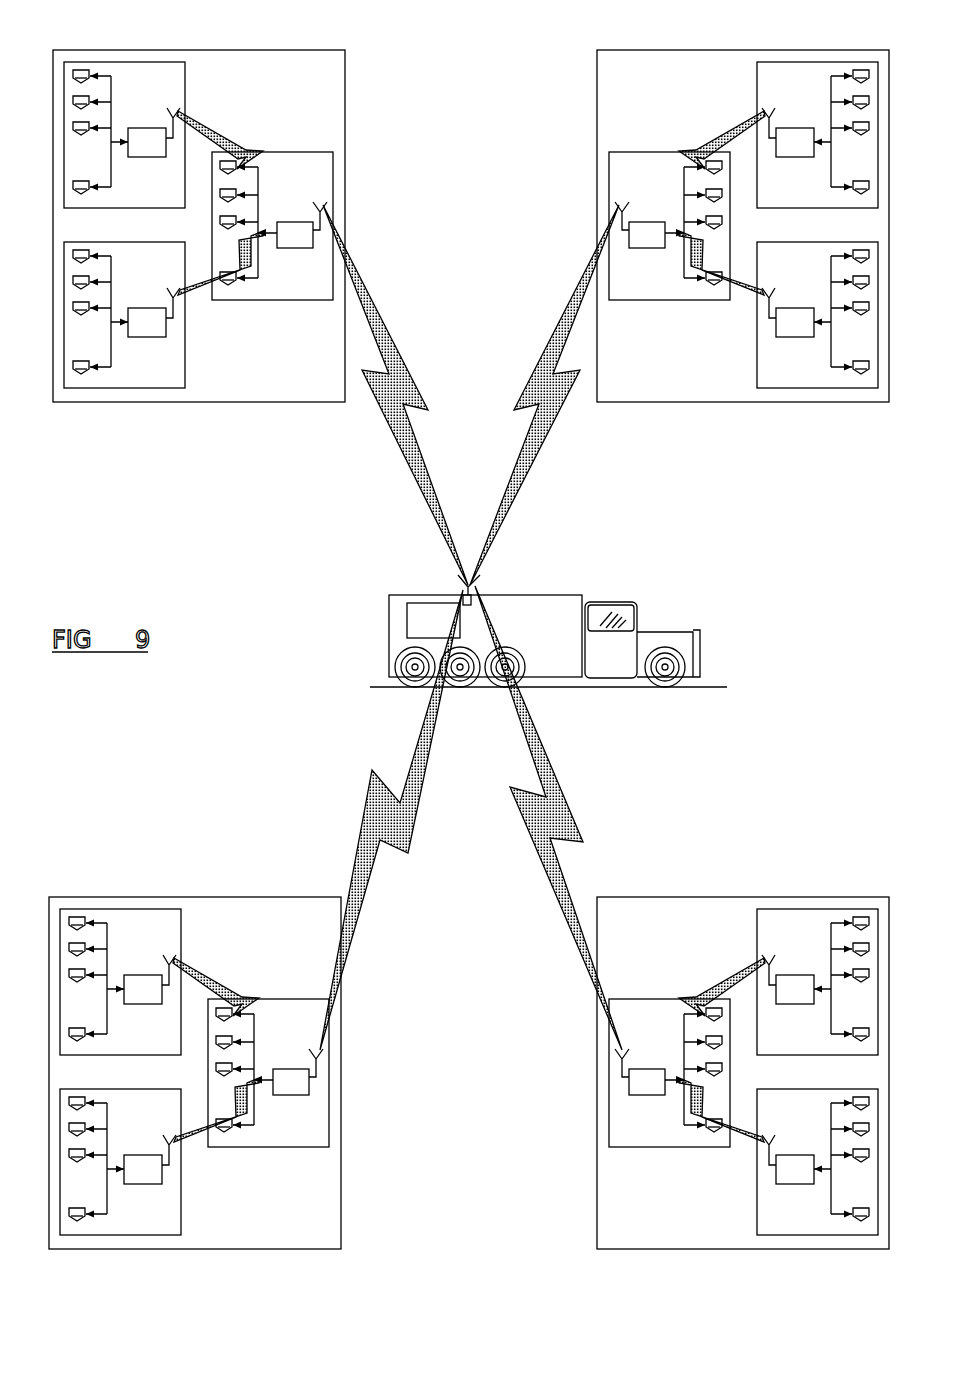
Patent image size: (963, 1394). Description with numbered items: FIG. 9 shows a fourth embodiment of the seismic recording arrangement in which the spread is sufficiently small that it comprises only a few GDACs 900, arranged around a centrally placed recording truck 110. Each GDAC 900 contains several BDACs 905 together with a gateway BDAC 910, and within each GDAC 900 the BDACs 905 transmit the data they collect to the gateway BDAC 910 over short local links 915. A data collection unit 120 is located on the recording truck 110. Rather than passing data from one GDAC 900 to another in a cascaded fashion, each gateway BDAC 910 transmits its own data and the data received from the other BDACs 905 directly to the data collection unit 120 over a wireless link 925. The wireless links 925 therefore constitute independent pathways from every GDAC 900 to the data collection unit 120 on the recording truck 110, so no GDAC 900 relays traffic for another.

The GDAC 900 is at (345, 125).
The BDAC 905 is at (187, 72).
The gateway BDAC 910 is at (333, 185).
The local wireless link 915 is at (254, 152).
The wireless link 925 is at (421, 490).
The recording truck 110 is at (640, 584).
The data collection unit 120 is at (458, 630).